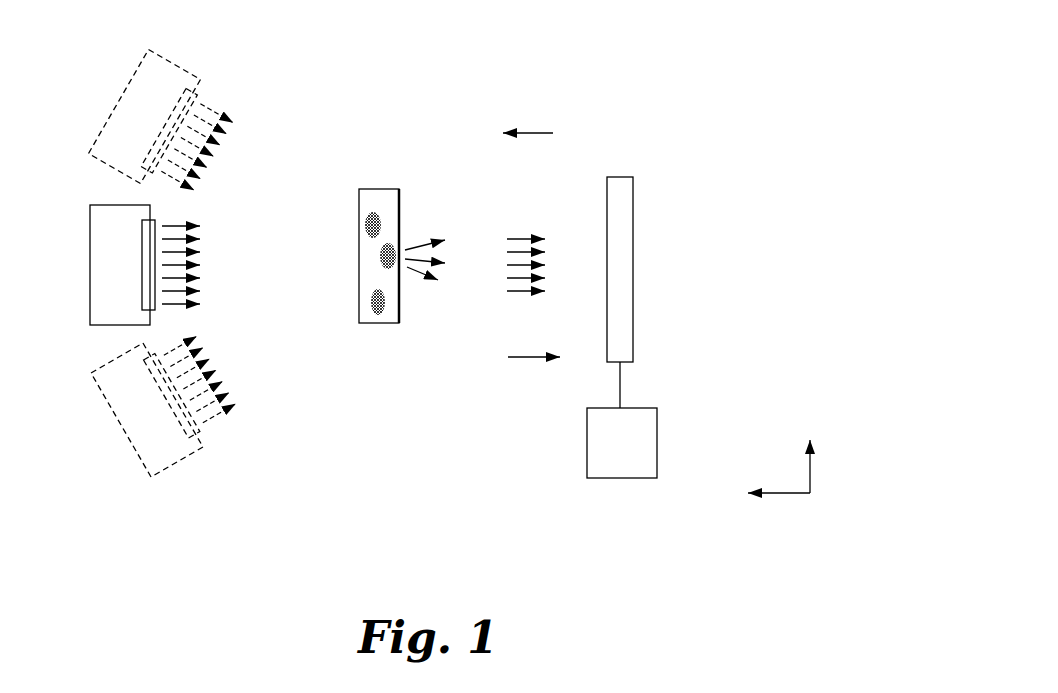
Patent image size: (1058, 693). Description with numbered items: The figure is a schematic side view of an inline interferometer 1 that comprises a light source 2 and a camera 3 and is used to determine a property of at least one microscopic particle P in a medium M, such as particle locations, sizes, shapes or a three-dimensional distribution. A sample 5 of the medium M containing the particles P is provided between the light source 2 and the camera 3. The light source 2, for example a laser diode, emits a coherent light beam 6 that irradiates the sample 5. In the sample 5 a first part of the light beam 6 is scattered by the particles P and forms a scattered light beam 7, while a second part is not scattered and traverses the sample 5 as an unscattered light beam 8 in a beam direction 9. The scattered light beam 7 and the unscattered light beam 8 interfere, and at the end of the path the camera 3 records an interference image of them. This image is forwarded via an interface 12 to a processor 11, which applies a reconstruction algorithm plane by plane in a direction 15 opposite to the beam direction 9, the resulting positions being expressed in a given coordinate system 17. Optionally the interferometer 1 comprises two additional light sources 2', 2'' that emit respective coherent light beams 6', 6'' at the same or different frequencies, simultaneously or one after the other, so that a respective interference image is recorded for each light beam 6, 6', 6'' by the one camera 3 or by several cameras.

The inline interferometer 1 is at (675, 65).
The light source 2 is at (102, 265).
The additional light source 2' is at (147, 118).
The additional light source 2'' is at (149, 433).
The camera 3 is at (628, 177).
The sample 5 is at (359, 208).
The coherent light beam 6 is at (203, 296).
The coherent light beam 6' is at (223, 123).
The coherent light beam 6'' is at (215, 412).
The scattered light beam 7 is at (423, 290).
The unscattered light beam 8 is at (533, 223).
The beam direction 9 is at (530, 357).
The processor 11 is at (657, 435).
The interface 12 is at (625, 383).
The direction 15 is at (535, 133).
The coordinate system 17 is at (797, 495).
The particle P is at (372, 305).
The medium M is at (390, 317).